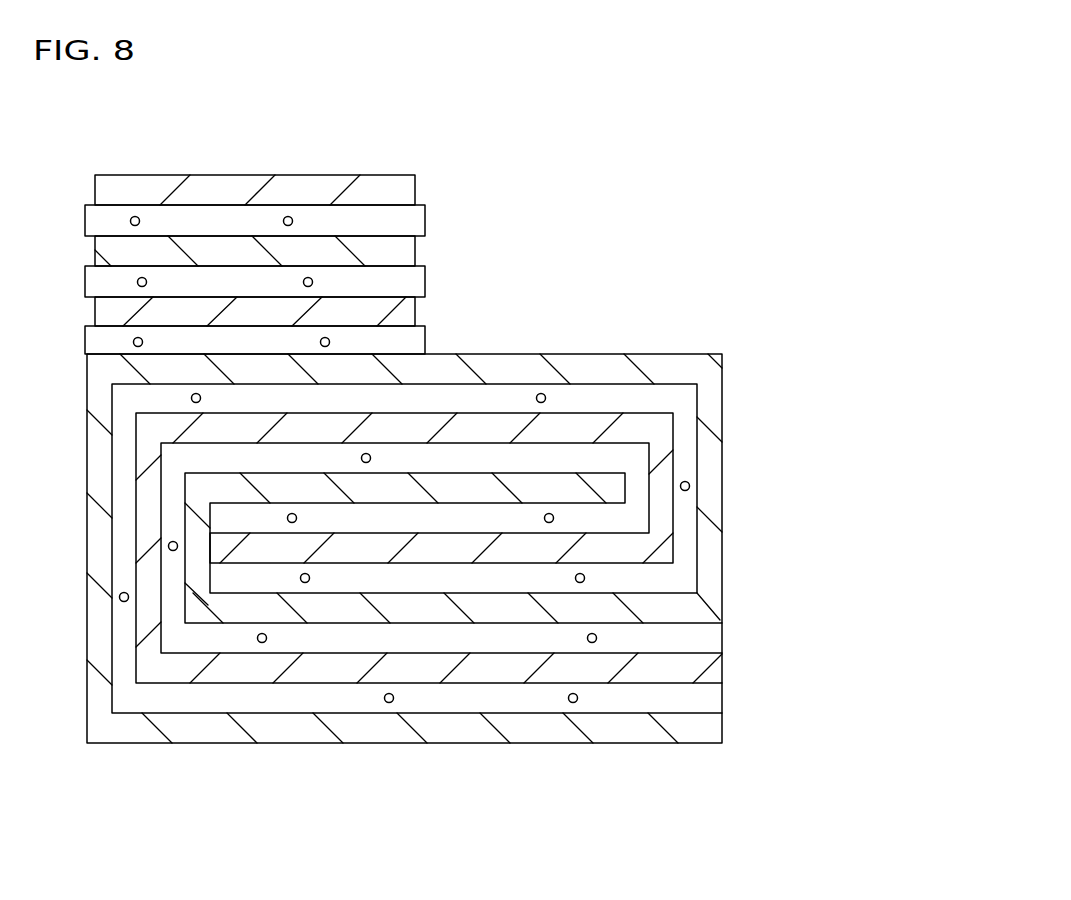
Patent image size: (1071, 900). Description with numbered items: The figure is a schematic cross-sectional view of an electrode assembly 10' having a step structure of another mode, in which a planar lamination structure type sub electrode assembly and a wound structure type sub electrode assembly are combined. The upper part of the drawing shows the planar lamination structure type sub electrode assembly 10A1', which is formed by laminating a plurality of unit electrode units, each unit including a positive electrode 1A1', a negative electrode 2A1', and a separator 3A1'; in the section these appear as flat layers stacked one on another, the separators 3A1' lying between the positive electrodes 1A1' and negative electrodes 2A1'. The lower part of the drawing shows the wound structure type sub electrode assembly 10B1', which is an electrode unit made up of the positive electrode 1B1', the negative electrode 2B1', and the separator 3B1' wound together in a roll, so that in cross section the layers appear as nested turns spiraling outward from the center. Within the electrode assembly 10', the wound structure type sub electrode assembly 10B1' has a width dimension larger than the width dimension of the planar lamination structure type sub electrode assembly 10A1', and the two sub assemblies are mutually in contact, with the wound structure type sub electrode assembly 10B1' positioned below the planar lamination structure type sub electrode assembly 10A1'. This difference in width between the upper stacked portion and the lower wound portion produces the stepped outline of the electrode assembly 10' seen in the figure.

The electrode assembly 10' is at (510, 447).
The planar lamination structure type sub electrode assembly 10A1' is at (355, 258).
The positive electrode 1A1' is at (309, 247).
The negative electrode 2A1' is at (309, 254).
The separator 3A1' is at (304, 279).
The wound structure type sub electrode assembly 10B1' is at (511, 545).
The positive electrode 1B1' is at (460, 548).
The negative electrode 2B1' is at (484, 548).
The separator 3B1' is at (476, 554).